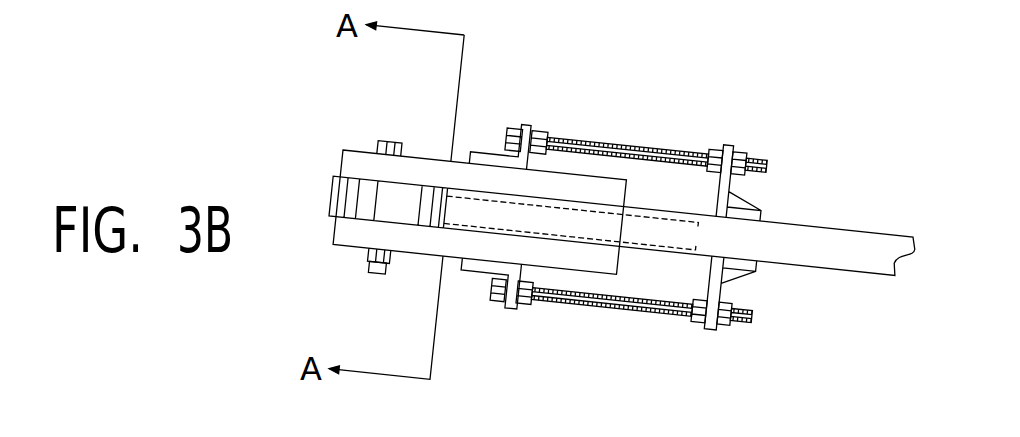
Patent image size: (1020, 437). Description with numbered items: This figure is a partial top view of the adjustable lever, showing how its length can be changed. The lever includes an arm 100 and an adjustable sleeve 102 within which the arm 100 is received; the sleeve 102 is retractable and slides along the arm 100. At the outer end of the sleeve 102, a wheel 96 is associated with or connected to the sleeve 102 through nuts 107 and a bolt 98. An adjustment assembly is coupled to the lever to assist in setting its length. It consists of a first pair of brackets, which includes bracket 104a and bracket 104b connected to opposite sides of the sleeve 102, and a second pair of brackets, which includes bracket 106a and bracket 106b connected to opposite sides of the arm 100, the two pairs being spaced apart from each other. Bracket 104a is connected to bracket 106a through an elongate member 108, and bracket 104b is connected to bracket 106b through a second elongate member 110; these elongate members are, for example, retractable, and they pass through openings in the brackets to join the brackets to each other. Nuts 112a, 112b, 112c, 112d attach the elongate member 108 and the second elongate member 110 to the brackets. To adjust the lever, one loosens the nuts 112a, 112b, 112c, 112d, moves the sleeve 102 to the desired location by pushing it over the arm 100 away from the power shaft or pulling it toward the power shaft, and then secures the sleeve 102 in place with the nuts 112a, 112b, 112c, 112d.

The wheel 96 is at (331, 191).
The bolt 98 is at (382, 272).
The arm 100 is at (838, 222).
The adjustable sleeve 102 is at (587, 185).
The bracket 104a is at (530, 127).
The bracket 104b is at (508, 306).
The bracket 106a is at (730, 146).
The bracket 106b is at (714, 330).
The nuts 107 is at (392, 141).
The elongate member 108 is at (652, 150).
The second elongate member 110 is at (632, 313).
The nut 112a is at (508, 138).
The nut 112b is at (490, 290).
The nut 112c is at (713, 147).
The nut 112d is at (699, 320).